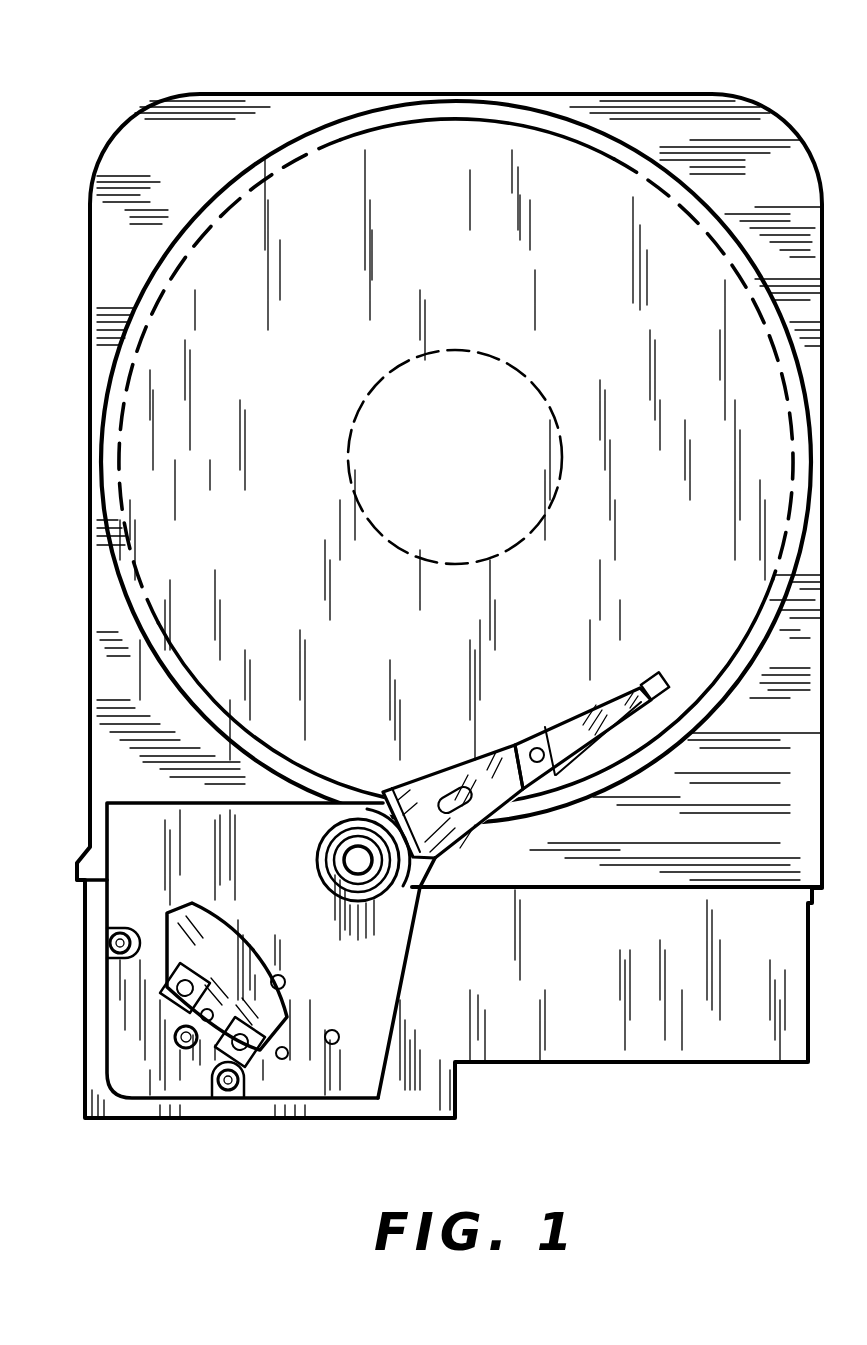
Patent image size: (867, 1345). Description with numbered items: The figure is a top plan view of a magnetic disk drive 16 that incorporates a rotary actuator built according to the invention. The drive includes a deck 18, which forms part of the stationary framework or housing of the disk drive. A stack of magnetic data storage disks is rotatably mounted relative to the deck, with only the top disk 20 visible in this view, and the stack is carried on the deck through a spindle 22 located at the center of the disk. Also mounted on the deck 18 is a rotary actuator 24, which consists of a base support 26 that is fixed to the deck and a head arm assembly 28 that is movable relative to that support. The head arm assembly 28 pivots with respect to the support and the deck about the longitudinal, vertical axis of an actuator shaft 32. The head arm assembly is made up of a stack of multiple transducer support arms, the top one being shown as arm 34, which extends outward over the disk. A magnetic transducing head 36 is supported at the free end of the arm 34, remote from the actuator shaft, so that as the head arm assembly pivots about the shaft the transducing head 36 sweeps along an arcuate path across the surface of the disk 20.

The magnetic disk drive 16 is at (634, 78).
The deck 18 is at (653, 1040).
The magnetic data storage disk 20 is at (697, 489).
The spindle 22 is at (534, 380).
The rotary actuator 24 is at (135, 835).
The base support 26 is at (362, 980).
The head arm assembly 28 is at (424, 792).
The actuator shaft 32 is at (352, 860).
The transducer support arm 34 is at (566, 722).
The magnetic transducing head 36 is at (657, 672).